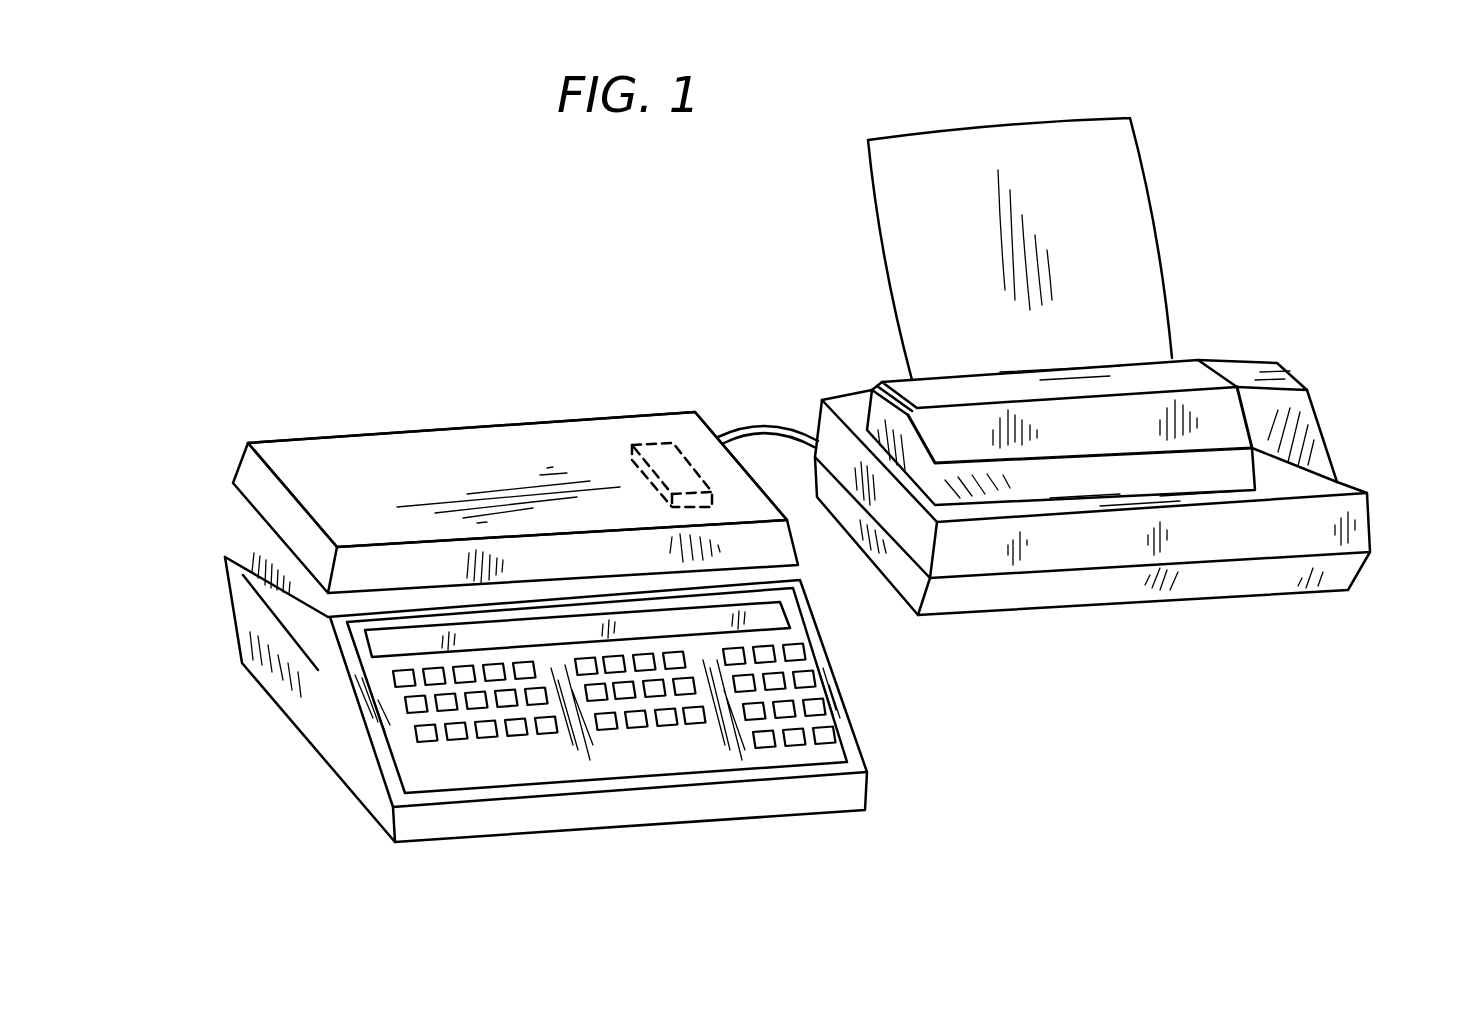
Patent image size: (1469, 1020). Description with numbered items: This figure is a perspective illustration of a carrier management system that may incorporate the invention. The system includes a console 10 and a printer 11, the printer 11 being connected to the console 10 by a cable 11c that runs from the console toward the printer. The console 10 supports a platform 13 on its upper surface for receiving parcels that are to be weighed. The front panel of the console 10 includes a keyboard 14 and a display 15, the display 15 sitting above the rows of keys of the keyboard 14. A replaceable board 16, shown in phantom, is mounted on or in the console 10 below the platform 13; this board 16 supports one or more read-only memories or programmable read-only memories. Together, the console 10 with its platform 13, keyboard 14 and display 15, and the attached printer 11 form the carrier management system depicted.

The console 10 is at (268, 587).
The printer 11 is at (1355, 465).
The cable 11c is at (767, 425).
The platform 13 is at (438, 462).
The keyboard 14 is at (402, 722).
The display 15 is at (385, 640).
The replaceable board 16 is at (650, 443).